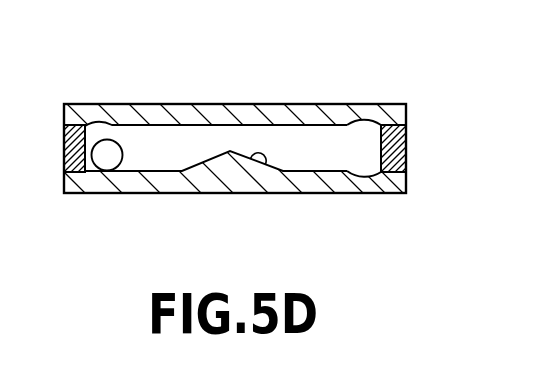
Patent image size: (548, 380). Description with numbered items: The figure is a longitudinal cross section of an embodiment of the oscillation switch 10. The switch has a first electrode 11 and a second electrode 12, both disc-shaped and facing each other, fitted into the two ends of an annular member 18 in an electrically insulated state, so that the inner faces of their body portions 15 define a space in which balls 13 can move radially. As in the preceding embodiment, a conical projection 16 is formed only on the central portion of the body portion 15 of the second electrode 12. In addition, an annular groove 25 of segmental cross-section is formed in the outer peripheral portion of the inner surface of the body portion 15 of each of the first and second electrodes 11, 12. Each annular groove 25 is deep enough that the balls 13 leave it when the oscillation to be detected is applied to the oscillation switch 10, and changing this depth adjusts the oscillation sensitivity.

The oscillation switch 10 is at (223, 93).
The first electrode 11 is at (165, 104).
The second electrode 12 is at (153, 197).
The ball 13 is at (97, 156).
The body portion 15 is at (295, 115).
The conical projection 16 is at (266, 166).
The annular member 18 is at (392, 145).
The annular groove 25 is at (363, 178).